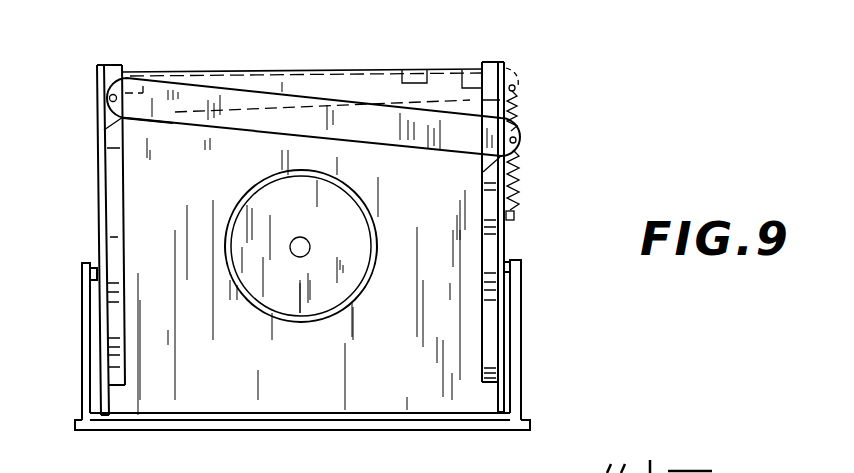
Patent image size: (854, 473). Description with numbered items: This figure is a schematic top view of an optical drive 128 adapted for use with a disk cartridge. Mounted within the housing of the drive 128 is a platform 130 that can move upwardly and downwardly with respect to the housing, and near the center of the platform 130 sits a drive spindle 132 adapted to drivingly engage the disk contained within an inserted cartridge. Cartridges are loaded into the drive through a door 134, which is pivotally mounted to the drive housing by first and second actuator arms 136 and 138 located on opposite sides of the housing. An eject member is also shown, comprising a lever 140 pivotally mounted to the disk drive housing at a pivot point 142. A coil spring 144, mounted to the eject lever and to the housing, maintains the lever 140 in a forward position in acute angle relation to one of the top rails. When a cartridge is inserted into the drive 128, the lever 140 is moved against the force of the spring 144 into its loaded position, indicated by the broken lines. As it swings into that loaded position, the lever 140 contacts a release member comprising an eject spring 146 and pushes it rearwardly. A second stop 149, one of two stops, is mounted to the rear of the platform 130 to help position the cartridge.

The optical drive 128 is at (548, 70).
The platform 130 is at (412, 372).
The drive spindle 132 is at (360, 248).
The door 134 is at (395, 431).
The first actuator arm 136 is at (82, 326).
The second actuator arm 138 is at (523, 331).
The lever 140 is at (249, 107).
The pivot point 142 is at (109, 98).
The coil spring 144 is at (524, 188).
The eject spring 146 is at (413, 72).
The second stop 149 is at (474, 72).